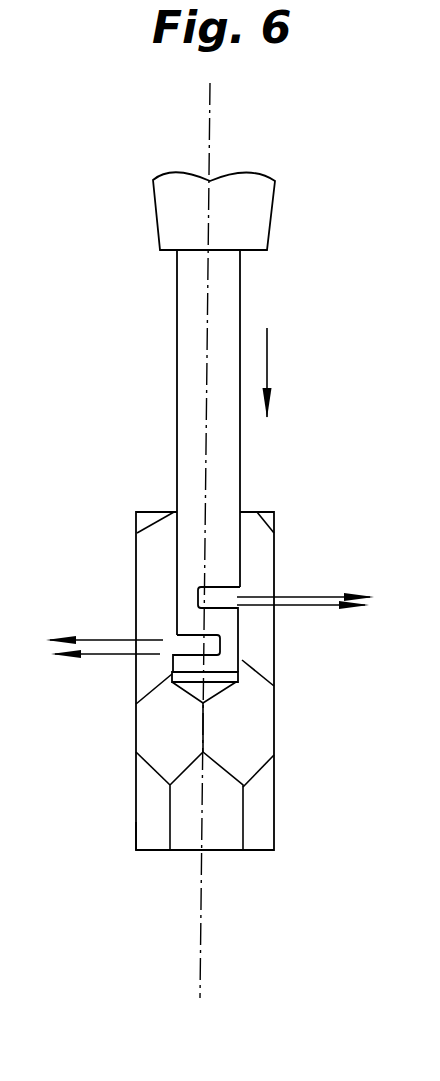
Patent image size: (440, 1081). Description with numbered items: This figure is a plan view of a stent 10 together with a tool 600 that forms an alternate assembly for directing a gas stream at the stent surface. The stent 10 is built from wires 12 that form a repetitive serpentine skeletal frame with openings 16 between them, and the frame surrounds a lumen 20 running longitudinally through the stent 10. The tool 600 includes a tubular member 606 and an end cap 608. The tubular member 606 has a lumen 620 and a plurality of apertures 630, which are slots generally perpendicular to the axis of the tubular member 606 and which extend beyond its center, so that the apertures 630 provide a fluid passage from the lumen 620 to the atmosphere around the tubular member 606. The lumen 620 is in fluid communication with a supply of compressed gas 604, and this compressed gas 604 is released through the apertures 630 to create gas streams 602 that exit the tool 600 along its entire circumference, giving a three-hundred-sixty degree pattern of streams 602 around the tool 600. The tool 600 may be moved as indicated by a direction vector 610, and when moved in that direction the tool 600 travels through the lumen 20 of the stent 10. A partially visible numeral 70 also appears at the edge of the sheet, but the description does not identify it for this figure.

The tool 600 is at (186, 492).
The tubular member 606 is at (193, 330).
The lumen 620 is at (200, 383).
The direction vector 610 is at (267, 367).
The apertures 630 is at (177, 637).
The gas streams 602 is at (105, 655).
The compressed gas 604 is at (361, 612).
The end cap 608 is at (212, 674).
The openings 16 is at (243, 725).
The wires 12 is at (253, 778).
The lumen 20 is at (221, 833).
The stent 10 is at (120, 825).
The element 70 is at (431, 512).